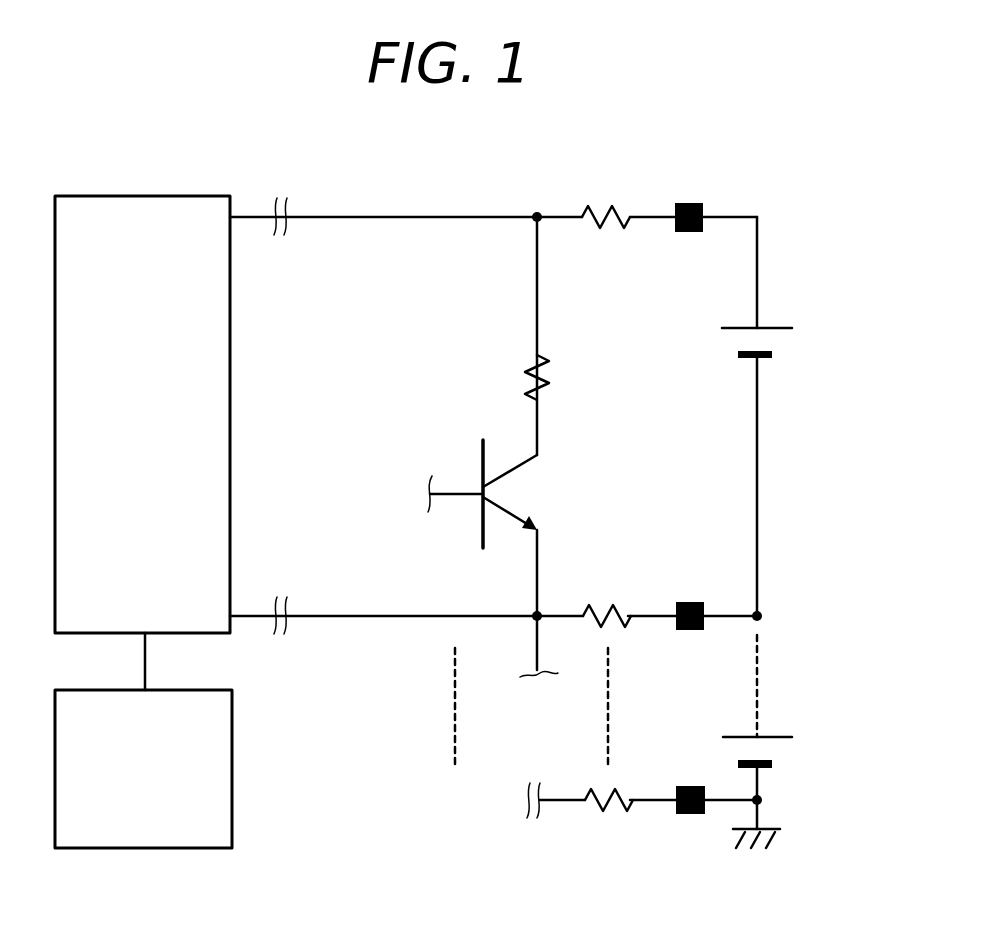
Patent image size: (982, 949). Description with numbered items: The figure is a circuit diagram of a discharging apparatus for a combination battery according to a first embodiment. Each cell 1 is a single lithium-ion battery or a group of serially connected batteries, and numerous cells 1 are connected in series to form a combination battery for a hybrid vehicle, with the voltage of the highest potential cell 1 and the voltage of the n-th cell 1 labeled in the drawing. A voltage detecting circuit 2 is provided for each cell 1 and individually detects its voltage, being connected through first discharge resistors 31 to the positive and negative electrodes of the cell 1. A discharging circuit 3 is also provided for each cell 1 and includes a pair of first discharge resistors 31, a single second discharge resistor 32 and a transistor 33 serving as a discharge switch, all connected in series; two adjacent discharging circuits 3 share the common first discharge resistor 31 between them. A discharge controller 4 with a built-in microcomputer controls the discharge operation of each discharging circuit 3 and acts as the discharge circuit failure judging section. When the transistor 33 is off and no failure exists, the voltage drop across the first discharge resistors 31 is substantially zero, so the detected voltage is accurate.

The cell 1 is at (770, 327).
The voltage detecting circuit 2 is at (232, 325).
The discharging circuit 3 is at (538, 449).
The discharge controller 4 is at (233, 744).
The first discharge resistor 31 is at (606, 210).
The second discharge resistor 32 is at (549, 370).
The transistor 33 is at (482, 460).